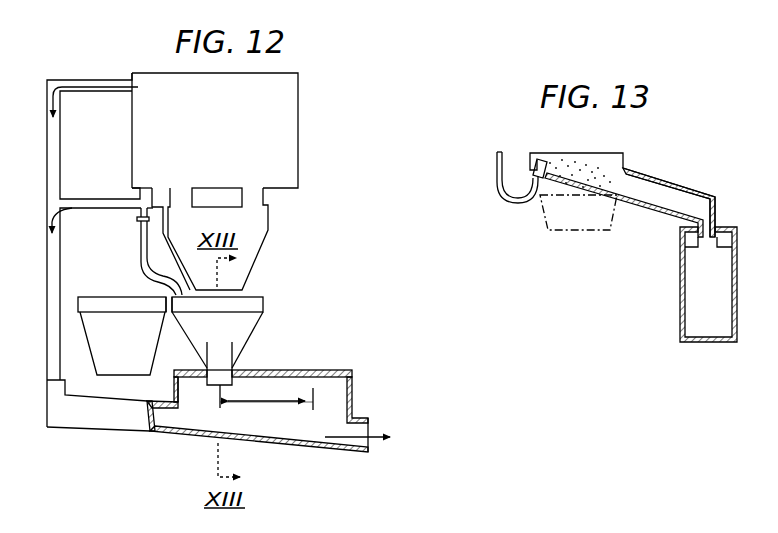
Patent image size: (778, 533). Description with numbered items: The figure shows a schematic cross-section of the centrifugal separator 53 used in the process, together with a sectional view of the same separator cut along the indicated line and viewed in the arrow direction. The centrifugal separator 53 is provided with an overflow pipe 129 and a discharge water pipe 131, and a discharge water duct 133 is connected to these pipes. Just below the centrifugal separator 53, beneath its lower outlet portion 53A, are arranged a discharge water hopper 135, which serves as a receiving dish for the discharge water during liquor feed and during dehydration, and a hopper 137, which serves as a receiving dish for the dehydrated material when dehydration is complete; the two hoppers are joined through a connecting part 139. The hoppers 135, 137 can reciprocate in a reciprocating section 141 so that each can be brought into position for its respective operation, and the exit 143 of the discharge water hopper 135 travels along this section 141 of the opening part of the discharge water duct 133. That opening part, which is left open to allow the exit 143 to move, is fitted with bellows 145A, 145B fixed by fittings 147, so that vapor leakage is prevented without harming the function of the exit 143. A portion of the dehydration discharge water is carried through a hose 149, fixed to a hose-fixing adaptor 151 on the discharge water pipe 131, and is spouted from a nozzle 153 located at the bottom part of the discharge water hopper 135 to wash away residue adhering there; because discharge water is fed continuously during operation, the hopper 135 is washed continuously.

In FIG. 12, the centrifugal separator 53 is at (300, 130).
In FIG. 12, the hopper outlet of container 53A is at (264, 244).
In FIG. 12, the overflow pipe 129 is at (62, 132).
In FIG. 12, the discharge water pipe 131 is at (92, 198).
In FIG. 12, the discharge water duct 133 is at (291, 445).
In FIG. 13, the discharge water duct 133 is at (682, 297).
In FIG. 12, the discharge water hopper 135 is at (264, 301).
In FIG. 13, the discharge water hopper 135 is at (632, 170).
In FIG. 12, the hopper 137 is at (107, 296).
In FIG. 13, the hopper 137 is at (577, 234).
In FIG. 12, the connecting part 139 is at (166, 313).
In FIG. 12, the reciprocating section 141 is at (279, 403).
In FIG. 12, the exit 143 is at (226, 387).
In FIG. 12, the bellows 145A is at (313, 370).
In FIG. 13, the bellows 145A is at (687, 239).
In FIG. 12, the bellows 145B is at (184, 383).
In FIG. 12, the fittings 147 is at (238, 371).
In FIG. 13, the hose 149 is at (498, 186).
In FIG. 12, the hose-fixing adaptor 151 is at (136, 216).
In FIG. 13, the nozzle 153 is at (546, 165).